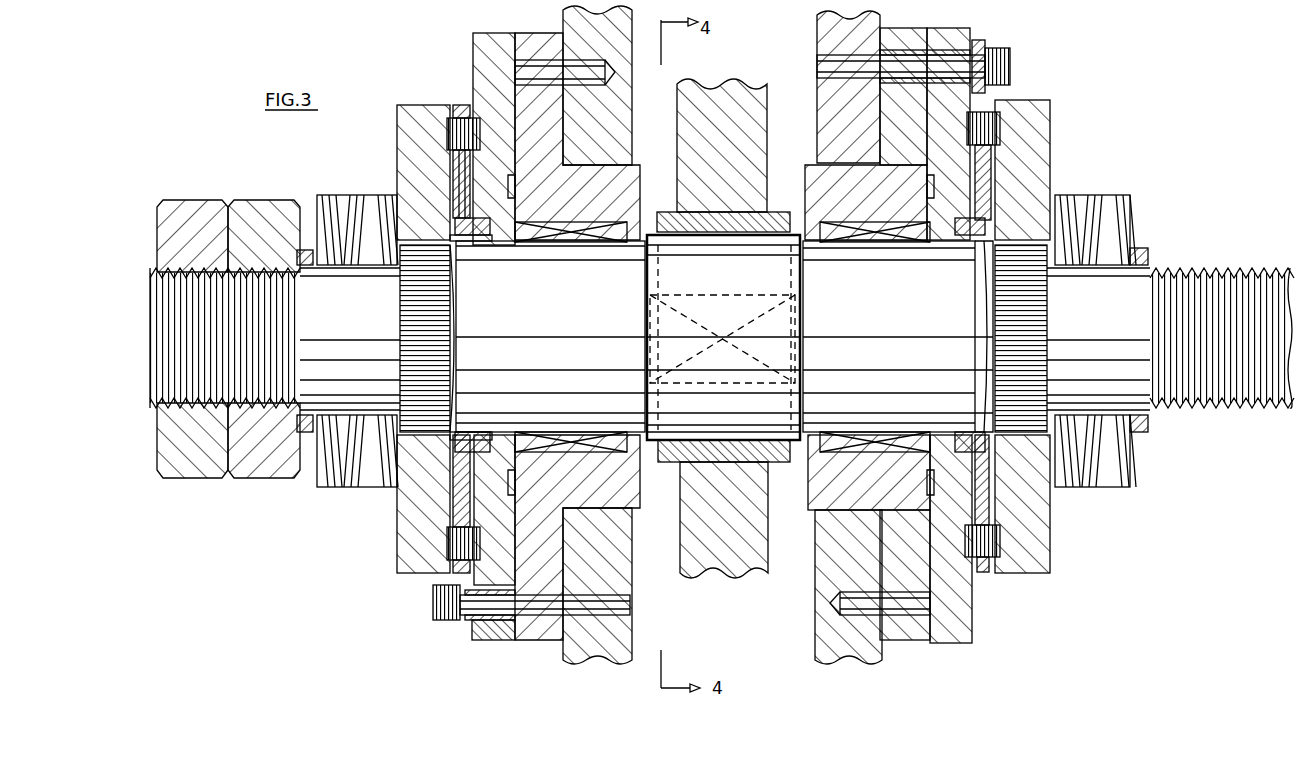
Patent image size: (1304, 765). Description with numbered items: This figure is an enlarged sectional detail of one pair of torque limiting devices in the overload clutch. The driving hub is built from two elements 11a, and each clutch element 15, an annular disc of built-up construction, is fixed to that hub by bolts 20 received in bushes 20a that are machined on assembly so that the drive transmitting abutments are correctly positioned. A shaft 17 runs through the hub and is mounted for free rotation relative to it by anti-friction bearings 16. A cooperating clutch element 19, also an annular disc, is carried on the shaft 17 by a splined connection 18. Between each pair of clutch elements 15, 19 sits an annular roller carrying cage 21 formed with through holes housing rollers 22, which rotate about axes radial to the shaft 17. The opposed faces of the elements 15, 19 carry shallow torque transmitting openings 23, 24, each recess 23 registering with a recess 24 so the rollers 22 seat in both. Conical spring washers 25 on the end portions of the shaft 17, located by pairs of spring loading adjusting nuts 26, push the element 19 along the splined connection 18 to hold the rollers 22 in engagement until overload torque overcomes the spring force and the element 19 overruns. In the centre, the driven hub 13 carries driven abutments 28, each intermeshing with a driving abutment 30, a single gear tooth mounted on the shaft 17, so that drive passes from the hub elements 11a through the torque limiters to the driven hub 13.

The driving hub element 11a is at (582, 660).
The driven hub 13 is at (750, 155).
The clutch element 15 is at (497, 632).
The anti-friction bearings 16 is at (603, 233).
The shaft 17 is at (722, 336).
The splined connection 18 is at (412, 308).
The clutch element 19 is at (397, 557).
The bolts 20 is at (1010, 66).
The bushes 20a is at (510, 640).
The roller carrying cage 21 is at (478, 432).
The rollers 22 is at (463, 118).
The torque transmitting openings 23 is at (450, 572).
The torque transmitting openings 24 is at (455, 545).
The conical spring washers 25 is at (330, 472).
The spring loading adjusting nuts 26 is at (216, 468).
The driven abutments 28 is at (752, 228).
The driving abutment 30 is at (723, 337).